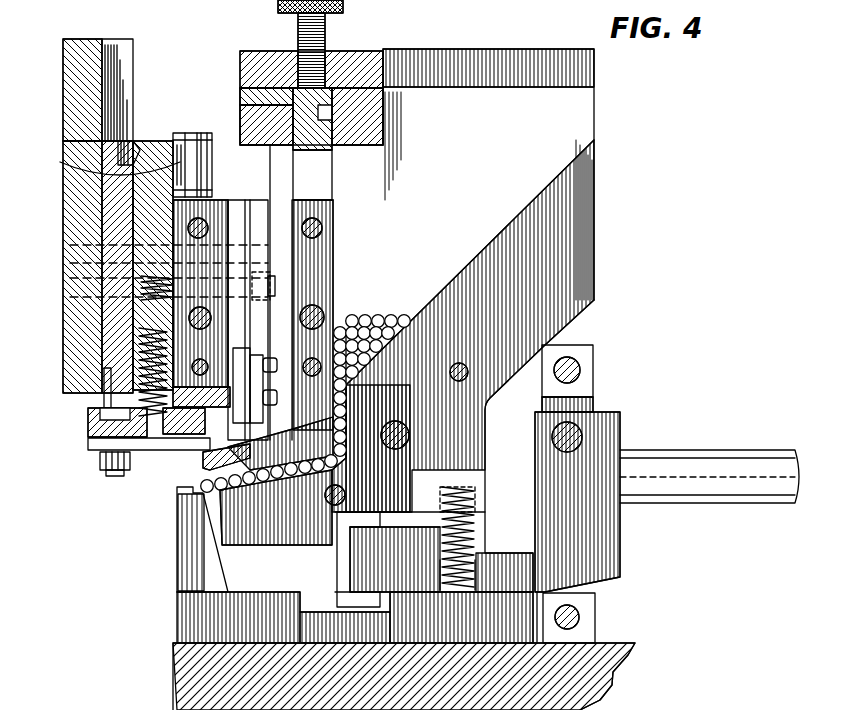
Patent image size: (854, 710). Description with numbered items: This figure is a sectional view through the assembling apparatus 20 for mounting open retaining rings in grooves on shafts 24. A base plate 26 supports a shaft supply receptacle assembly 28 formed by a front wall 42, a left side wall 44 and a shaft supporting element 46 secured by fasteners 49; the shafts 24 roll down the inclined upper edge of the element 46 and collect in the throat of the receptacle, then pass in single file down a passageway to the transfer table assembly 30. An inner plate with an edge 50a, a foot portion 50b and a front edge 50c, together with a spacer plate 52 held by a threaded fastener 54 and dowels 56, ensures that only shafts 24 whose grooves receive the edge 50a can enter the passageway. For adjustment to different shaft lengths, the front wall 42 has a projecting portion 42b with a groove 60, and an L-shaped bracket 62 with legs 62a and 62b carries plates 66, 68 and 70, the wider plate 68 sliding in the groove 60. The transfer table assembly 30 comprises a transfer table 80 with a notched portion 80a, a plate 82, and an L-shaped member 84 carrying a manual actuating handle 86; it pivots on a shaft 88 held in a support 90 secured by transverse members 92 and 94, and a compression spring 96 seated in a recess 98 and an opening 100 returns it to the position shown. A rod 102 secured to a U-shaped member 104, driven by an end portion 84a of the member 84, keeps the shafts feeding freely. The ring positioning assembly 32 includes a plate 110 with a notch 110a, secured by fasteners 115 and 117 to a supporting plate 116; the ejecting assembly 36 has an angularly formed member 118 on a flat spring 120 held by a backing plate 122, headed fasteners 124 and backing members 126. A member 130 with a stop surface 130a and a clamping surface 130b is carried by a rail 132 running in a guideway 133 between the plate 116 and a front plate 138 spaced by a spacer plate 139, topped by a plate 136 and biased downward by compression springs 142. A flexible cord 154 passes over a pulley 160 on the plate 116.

The assembling apparatus 20 is at (96, 556).
The shaft 24 is at (408, 314).
The base plate 26 is at (620, 645).
The shaft supply receptacle assembly 28 is at (574, 133).
The transfer table assembly 30 is at (163, 588).
The ring positioning assembly 32 is at (220, 188).
The ejecting assembly 36 is at (278, 203).
The front wall 42 is at (306, 165).
The projecting portion 42b is at (286, 80).
The left side wall 44 is at (580, 100).
The shaft supporting element 46 is at (596, 175).
The fasteners 49 is at (463, 365).
The edge 50a is at (337, 296).
The foot portion 50b is at (244, 491).
The front edge 50c is at (206, 477).
The spacer plate 52 is at (323, 250).
The threaded fastener 54 is at (317, 304).
The dowels 56 is at (303, 232).
The groove 60 is at (330, 112).
The L-shaped bracket 62 is at (380, 50).
The leg 62a is at (482, 50).
The front leg 62b is at (280, 50).
The plate 66 is at (244, 92).
The plate 68 is at (242, 107).
The plate 70 is at (243, 138).
The transfer table 80 is at (180, 568).
The notched portion 80a is at (194, 494).
The plate 82 is at (185, 635).
The L-shaped member 84 is at (619, 438).
The end portion 84a is at (366, 553).
The manual actuating handle 86 is at (720, 455).
The shaft 88 is at (582, 432).
The support 90 is at (594, 404).
The transversely extending member 92 is at (590, 355).
The transversely extending member 94 is at (597, 604).
The compression spring 96 is at (477, 524).
The recess 98 is at (478, 493).
The opening 100 is at (477, 556).
The rod 102 is at (360, 523).
The U-shaped member 104 is at (338, 570).
The plate 110 is at (199, 392).
The notch 110a is at (120, 446).
The dowels and threaded fasteners 115 is at (188, 229).
The supporting plate 116 is at (152, 145).
The dowels and threaded fasteners 117 is at (72, 263).
The angularly formed member 118 is at (240, 356).
The flat spring 120 is at (256, 332).
The backing plate 122 is at (258, 352).
The headed fasteners 124 is at (268, 387).
The backing members 126 is at (252, 198).
The member 130 is at (90, 420).
The vertical wall surface 130a is at (203, 458).
The lower wall surface 130b is at (118, 472).
The rail 132 is at (118, 40).
The guideway 133 is at (104, 380).
The plate 136 is at (66, 110).
The front plate 138 is at (68, 182).
The spacer plate 139 is at (120, 163).
The compression springs 142 is at (148, 396).
The flexible cord 154 is at (199, 134).
The pulley 160 is at (102, 163).